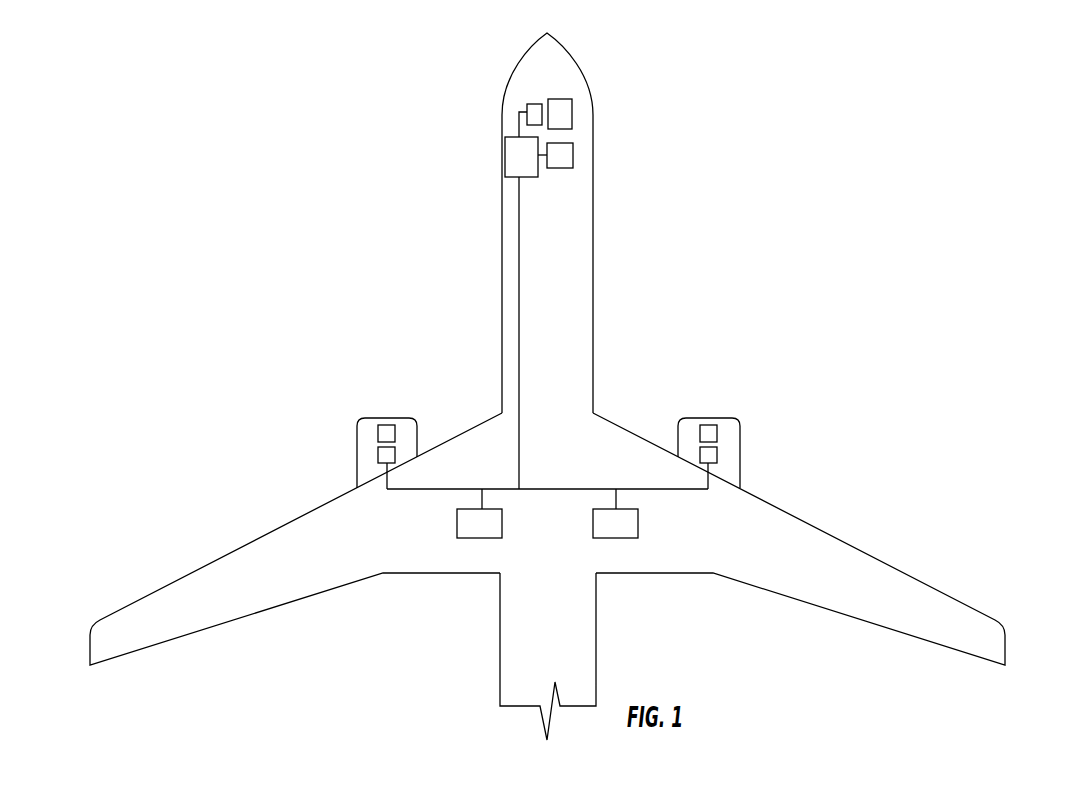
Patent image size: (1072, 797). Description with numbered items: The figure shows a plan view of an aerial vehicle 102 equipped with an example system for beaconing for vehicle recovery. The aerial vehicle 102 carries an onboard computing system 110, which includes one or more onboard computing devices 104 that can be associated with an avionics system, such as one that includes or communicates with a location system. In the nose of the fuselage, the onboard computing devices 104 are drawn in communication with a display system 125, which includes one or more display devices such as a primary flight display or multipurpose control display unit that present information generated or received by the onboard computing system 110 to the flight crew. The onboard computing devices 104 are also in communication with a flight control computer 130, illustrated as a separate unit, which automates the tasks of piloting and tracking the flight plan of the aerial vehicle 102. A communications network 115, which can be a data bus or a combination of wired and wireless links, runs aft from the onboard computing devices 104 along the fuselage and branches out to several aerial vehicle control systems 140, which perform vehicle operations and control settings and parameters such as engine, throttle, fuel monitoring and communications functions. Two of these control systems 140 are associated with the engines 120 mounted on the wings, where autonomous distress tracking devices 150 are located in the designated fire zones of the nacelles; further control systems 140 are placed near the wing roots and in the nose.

The onboard computing system 110 is at (737, 137).
The aerial vehicle 102 is at (578, 277).
The onboard computing device 104 is at (505, 152).
The communications network 115 is at (519, 310).
The engine 120 is at (407, 428).
The display system 125 is at (563, 99).
The flight control computer 130 is at (534, 104).
The aerial vehicle control system 140 is at (573, 153).
The autonomous distress tracking device 150 is at (378, 430).